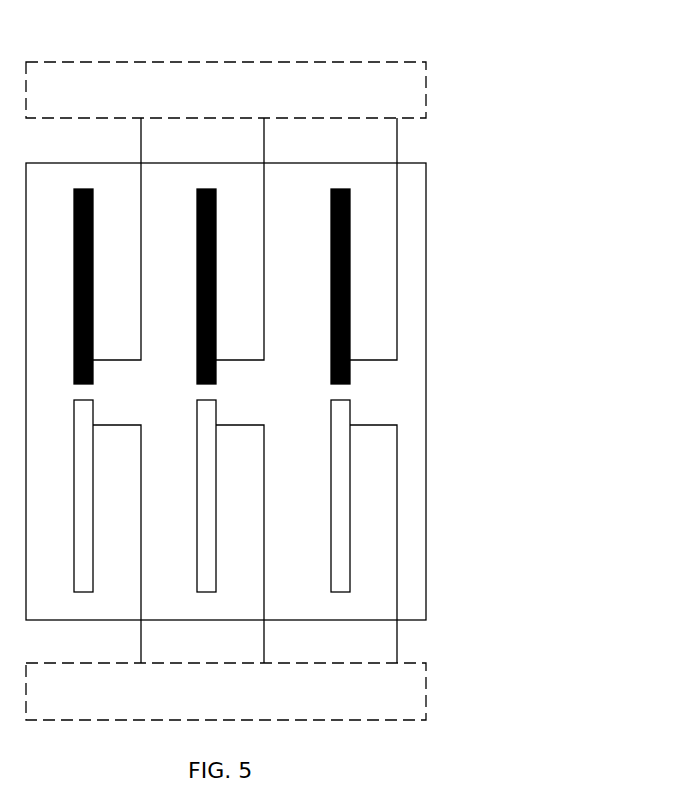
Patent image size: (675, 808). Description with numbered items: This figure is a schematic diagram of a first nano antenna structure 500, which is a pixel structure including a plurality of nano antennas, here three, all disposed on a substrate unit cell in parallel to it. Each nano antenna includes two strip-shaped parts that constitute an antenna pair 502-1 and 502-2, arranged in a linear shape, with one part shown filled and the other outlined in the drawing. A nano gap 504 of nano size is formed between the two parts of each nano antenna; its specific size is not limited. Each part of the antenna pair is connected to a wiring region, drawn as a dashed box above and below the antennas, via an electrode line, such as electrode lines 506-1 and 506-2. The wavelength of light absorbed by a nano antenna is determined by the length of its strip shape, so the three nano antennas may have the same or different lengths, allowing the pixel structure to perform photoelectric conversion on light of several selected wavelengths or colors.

The first nano antenna structure 500 is at (483, 51).
The antenna pair part 502-1 is at (350, 232).
The antenna pair part 502-2 is at (350, 535).
The nano gap 504 is at (360, 387).
The electrode line 506-1 is at (398, 305).
The electrode line 506-2 is at (398, 605).